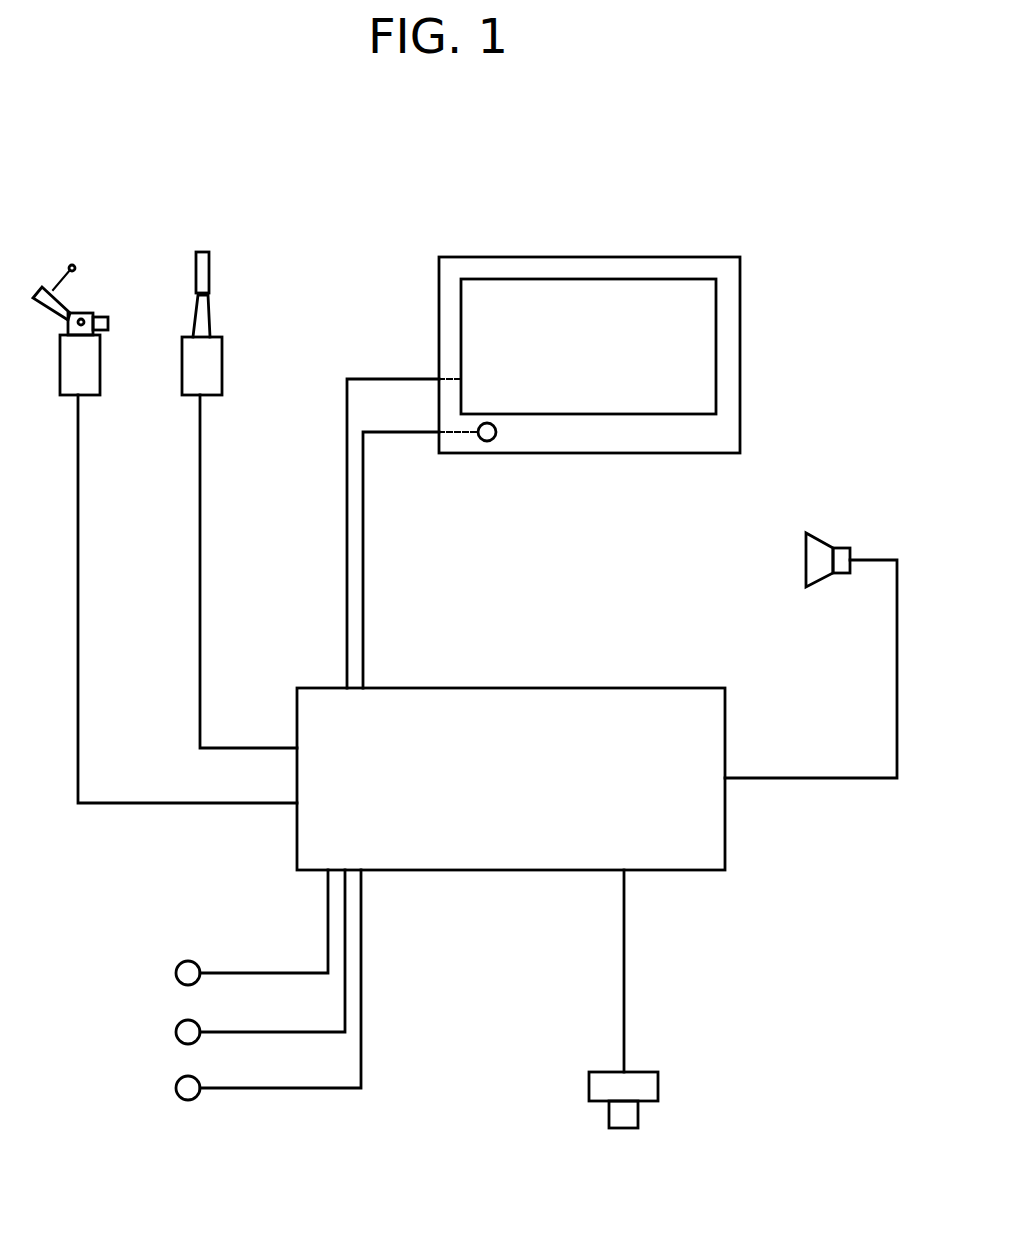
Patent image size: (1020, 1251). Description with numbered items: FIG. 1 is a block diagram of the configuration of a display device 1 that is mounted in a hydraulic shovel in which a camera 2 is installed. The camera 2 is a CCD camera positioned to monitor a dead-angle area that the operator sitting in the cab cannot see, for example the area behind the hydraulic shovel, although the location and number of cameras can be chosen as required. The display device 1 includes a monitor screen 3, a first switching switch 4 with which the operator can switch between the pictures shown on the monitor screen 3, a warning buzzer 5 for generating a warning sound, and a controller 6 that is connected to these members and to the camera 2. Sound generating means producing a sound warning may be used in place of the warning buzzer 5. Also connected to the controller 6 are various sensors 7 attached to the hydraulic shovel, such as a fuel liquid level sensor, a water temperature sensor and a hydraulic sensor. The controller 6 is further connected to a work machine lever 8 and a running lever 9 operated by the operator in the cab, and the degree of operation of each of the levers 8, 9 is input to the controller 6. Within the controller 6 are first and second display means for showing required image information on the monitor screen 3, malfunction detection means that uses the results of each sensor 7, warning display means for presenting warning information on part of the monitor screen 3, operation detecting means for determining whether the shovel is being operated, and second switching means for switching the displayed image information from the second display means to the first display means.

The display device 1 is at (288, 239).
The camera 2 is at (658, 1095).
The monitor screen 3 is at (668, 280).
The first switching switch 4 is at (493, 440).
The warning buzzer 5 is at (822, 538).
The controller 6 is at (725, 843).
The sensors 7 is at (148, 962).
The work machine lever 8 is at (223, 353).
The running lever 9 is at (102, 355).